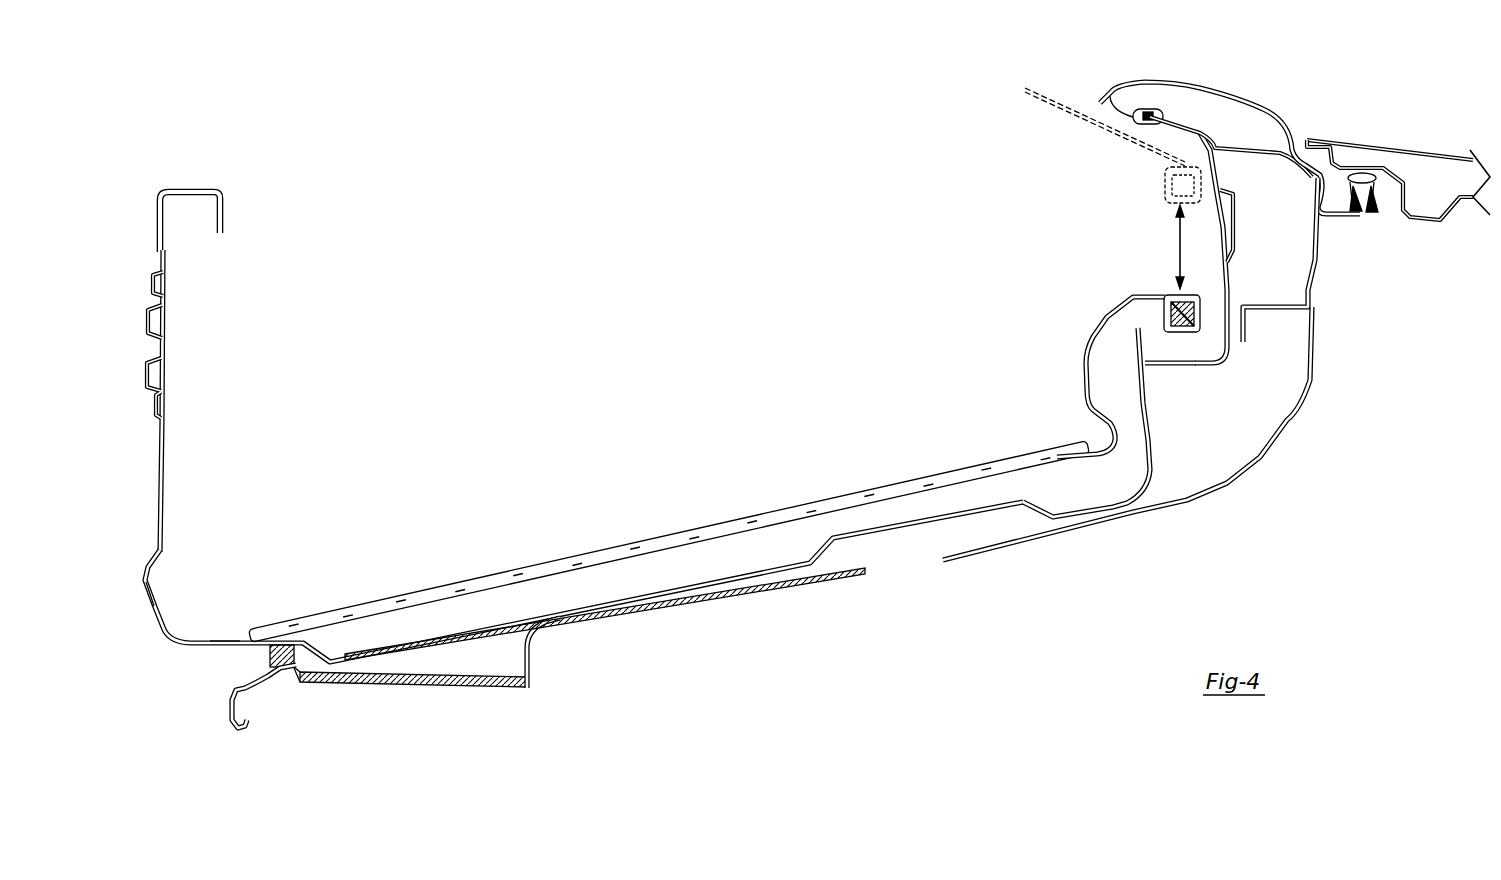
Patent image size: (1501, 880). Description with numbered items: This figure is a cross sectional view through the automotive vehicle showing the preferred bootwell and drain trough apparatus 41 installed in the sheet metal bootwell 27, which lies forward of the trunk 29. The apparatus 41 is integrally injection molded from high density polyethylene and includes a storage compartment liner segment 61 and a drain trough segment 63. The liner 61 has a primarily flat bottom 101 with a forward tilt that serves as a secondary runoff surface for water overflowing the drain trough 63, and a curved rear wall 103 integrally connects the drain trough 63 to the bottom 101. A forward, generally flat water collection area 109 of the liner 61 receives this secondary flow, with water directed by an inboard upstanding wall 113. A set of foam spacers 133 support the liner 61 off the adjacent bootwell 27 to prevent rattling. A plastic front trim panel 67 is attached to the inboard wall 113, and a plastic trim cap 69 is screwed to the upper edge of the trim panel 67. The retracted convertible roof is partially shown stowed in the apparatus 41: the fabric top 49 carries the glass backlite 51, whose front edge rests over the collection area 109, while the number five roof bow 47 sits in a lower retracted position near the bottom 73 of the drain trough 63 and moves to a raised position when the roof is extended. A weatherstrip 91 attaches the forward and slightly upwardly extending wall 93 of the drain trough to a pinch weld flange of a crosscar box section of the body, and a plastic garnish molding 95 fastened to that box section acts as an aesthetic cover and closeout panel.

The bootwell and drain trough apparatus 41 is at (458, 160).
The trim cap 69 is at (193, 190).
The front trim panel 67 is at (163, 437).
The water collection area 109 is at (213, 642).
The inboard upstanding wall 113 is at (150, 622).
The storage compartment liner segment 61 is at (190, 646).
The foam spacers 133 is at (268, 665).
The bootwell 27 is at (443, 683).
The bottom 101 is at (687, 587).
The backlite 51 is at (772, 512).
The fabric top 49 is at (1088, 366).
The roof bow 47 is at (1165, 312).
The drain trough segment 63 is at (1213, 213).
The bottom of drain trough 73 is at (1145, 363).
The curved rear wall 103 is at (1140, 436).
The weatherstrip 91 is at (1093, 115).
The forward wall of drain trough 93 is at (1172, 123).
The garnish molding 95 is at (1260, 107).
The trunk 29 is at (1370, 347).